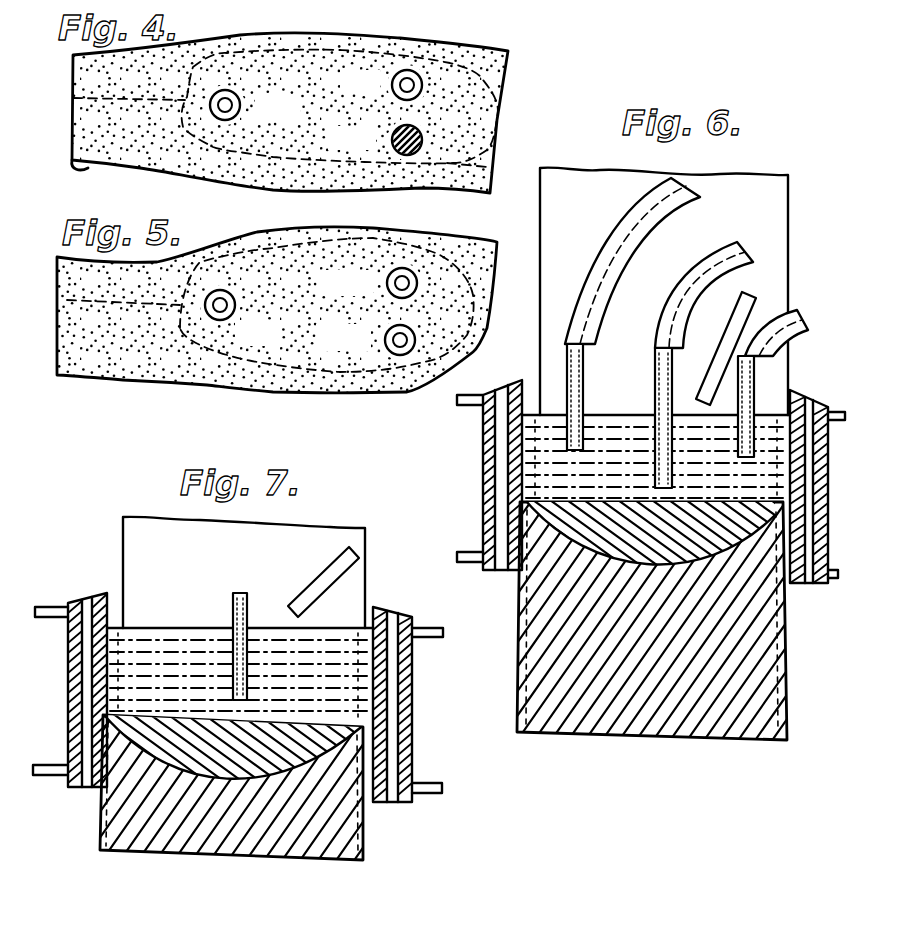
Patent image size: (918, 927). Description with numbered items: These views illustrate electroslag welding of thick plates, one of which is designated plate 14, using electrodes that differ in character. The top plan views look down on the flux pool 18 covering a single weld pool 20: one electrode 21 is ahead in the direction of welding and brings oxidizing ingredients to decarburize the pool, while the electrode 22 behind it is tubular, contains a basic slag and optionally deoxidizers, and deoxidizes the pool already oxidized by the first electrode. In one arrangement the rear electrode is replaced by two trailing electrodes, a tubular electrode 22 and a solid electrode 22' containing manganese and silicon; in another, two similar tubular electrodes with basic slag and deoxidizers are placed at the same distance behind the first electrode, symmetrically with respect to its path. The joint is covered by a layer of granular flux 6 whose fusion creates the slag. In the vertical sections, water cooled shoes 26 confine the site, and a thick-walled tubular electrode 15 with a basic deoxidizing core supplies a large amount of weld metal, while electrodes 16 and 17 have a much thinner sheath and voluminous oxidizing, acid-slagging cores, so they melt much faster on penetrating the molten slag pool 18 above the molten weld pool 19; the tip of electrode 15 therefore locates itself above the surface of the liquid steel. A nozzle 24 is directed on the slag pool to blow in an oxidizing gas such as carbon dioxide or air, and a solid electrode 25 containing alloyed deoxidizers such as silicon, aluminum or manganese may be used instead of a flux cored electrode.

In FIG. 4, the granular flux 6 is at (91, 175).
In FIG. 5, the granular flux 6 is at (118, 382).
In FIG. 6, the plate 14 is at (789, 219).
In FIG. 7, the plate 14 is at (366, 535).
In FIG. 6, the tubular electrode 15 is at (653, 397).
In FIG. 6, the electrode 16 is at (754, 410).
In FIG. 6, the electrode 17 is at (567, 393).
In FIG. 4, the molten slag pool 18 is at (384, 36).
In FIG. 5, the molten slag pool 18 is at (357, 230).
In FIG. 6, the molten slag pool 18 is at (646, 410).
In FIG. 4, the molten weld pool 19 is at (262, 38).
In FIG. 5, the molten weld pool 19 is at (280, 238).
In FIG. 6, the molten weld pool 19 is at (632, 621).
In FIG. 7, the molten weld pool 19 is at (228, 787).
In FIG. 6, the weld pool surface 20 is at (648, 547).
In FIG. 7, the weld pool surface 20 is at (224, 758).
In FIG. 4, the forward electrode 21 is at (249, 106).
In FIG. 5, the forward electrode 21 is at (230, 312).
In FIG. 4, the trailing electrode 22 is at (382, 84).
In FIG. 4, the solid electrode 22' is at (391, 140).
In FIG. 6, the nozzle 24 is at (755, 312).
In FIG. 7, the nozzle 24 is at (307, 592).
In FIG. 7, the solid electrode 25 is at (233, 606).
In FIG. 6, the water cooled shoes 26 is at (483, 458).
In FIG. 7, the water cooled shoes 26 is at (67, 690).